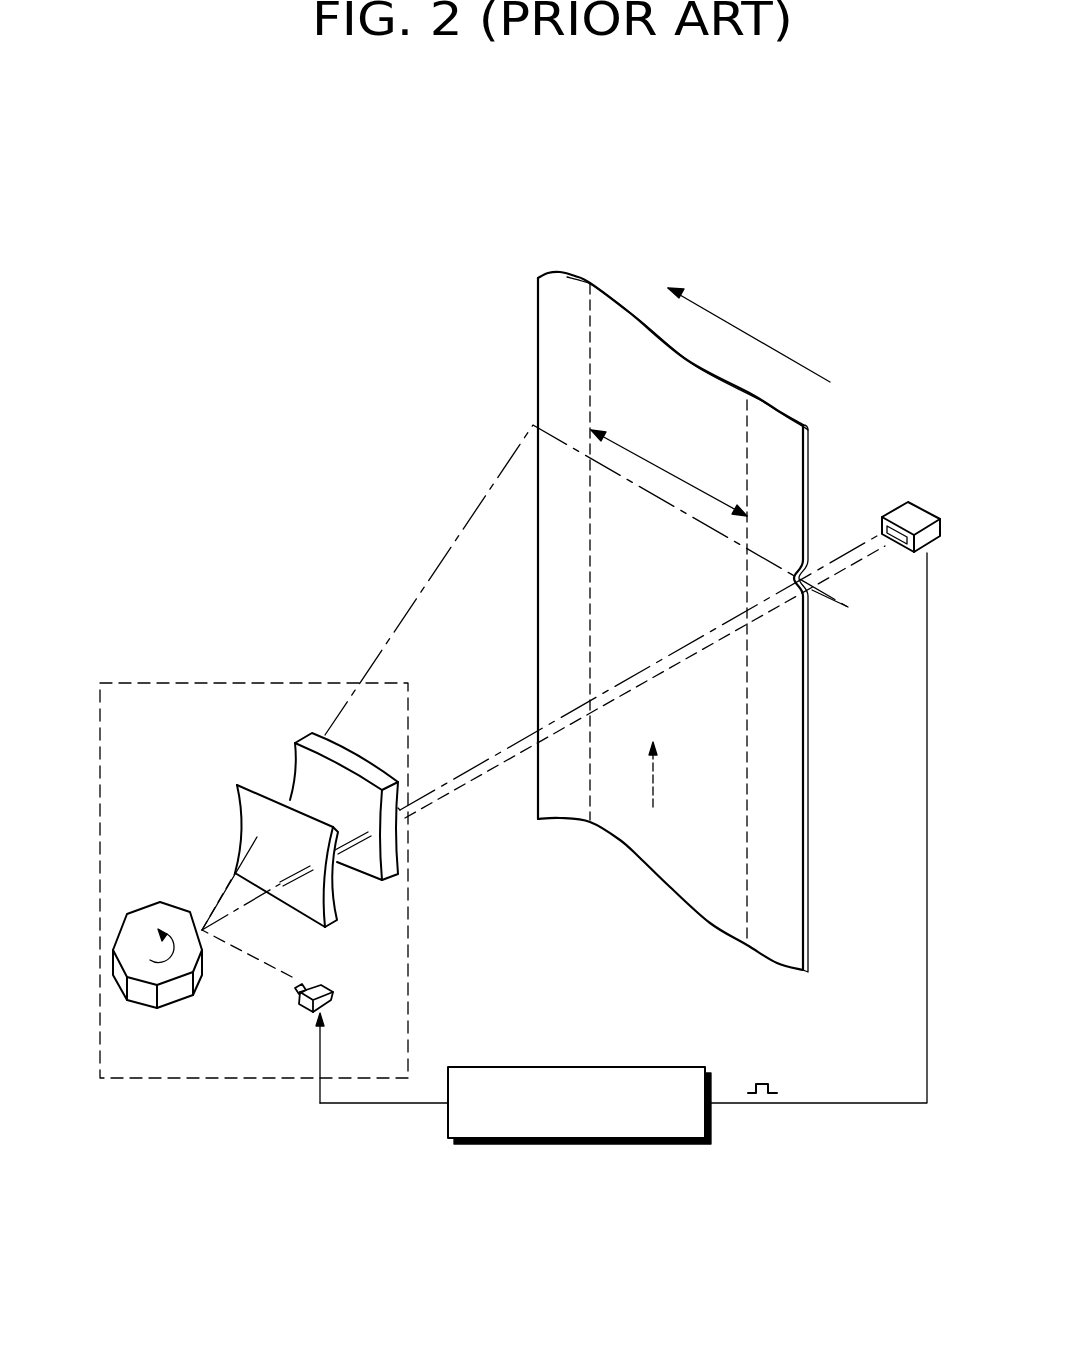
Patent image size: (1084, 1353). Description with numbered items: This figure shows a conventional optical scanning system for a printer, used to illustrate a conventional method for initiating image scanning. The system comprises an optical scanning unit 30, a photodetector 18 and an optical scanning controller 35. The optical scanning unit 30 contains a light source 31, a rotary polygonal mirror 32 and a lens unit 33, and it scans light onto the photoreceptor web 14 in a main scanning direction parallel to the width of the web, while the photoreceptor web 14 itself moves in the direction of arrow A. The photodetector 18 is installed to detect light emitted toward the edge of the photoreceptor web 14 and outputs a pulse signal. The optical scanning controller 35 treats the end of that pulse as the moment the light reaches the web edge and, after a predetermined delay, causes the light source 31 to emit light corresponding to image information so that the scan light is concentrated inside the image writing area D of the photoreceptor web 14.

The photoreceptor web 14 is at (777, 917).
The photodetector 18 is at (922, 518).
The optical scanning unit 30 is at (209, 1080).
The light source 31 is at (330, 1003).
The rotary polygonal mirror 32 is at (157, 922).
The lens unit 33 is at (306, 712).
The optical scanning controller 35 is at (540, 1145).